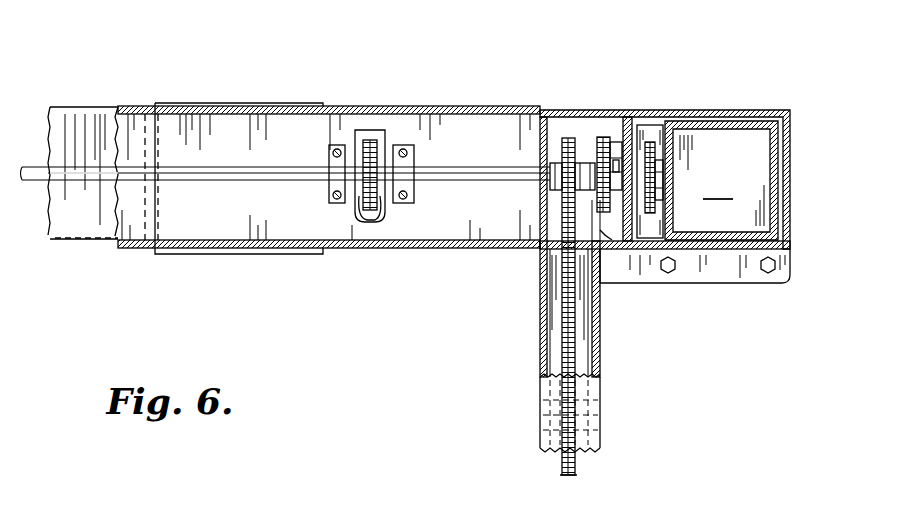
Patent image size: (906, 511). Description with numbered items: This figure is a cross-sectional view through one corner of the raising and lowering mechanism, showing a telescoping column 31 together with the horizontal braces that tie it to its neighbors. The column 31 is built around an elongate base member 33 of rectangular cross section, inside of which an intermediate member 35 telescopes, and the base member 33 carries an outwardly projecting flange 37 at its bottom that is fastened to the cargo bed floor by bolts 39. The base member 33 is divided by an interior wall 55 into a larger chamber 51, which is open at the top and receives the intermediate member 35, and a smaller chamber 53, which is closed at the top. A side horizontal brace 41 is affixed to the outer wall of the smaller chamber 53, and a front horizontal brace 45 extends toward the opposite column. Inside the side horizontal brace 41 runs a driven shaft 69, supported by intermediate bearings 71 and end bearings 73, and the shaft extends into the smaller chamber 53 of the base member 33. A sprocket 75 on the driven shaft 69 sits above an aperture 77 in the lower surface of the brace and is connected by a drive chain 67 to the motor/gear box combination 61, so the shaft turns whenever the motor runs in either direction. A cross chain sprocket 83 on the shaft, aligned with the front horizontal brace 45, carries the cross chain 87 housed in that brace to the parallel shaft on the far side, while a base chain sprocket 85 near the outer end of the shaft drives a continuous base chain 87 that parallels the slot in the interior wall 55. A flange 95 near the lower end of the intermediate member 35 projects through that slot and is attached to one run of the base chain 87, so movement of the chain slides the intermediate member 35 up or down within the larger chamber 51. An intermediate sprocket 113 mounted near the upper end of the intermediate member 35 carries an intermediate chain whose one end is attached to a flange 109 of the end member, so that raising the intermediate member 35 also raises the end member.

The telescoping column 31 is at (795, 233).
The base member 33 is at (786, 118).
The intermediate member 35 is at (732, 112).
The flange 37 is at (722, 284).
The bolts 39 is at (666, 274).
The side horizontal brace 41 is at (492, 250).
The front horizontal brace 45 is at (600, 398).
The larger chamber 51 is at (721, 180).
The smaller chamber 53 is at (608, 122).
The interior wall 55 is at (612, 244).
The motor/gear box combination 61 is at (216, 128).
The drive chain 67 is at (362, 222).
The driven shaft 69 is at (474, 168).
The intermediate bearings 71 is at (338, 145).
The end bearings 73 is at (645, 160).
The sprocket 75 is at (378, 222).
The aperture 77 is at (382, 130).
The cross chain sprocket 83 is at (580, 150).
The base chain sprocket 85 is at (592, 210).
The base chain 87 is at (575, 150).
The flange 95 is at (618, 118).
The flange 109 is at (718, 216).
The intermediate sprocket 113 is at (652, 142).